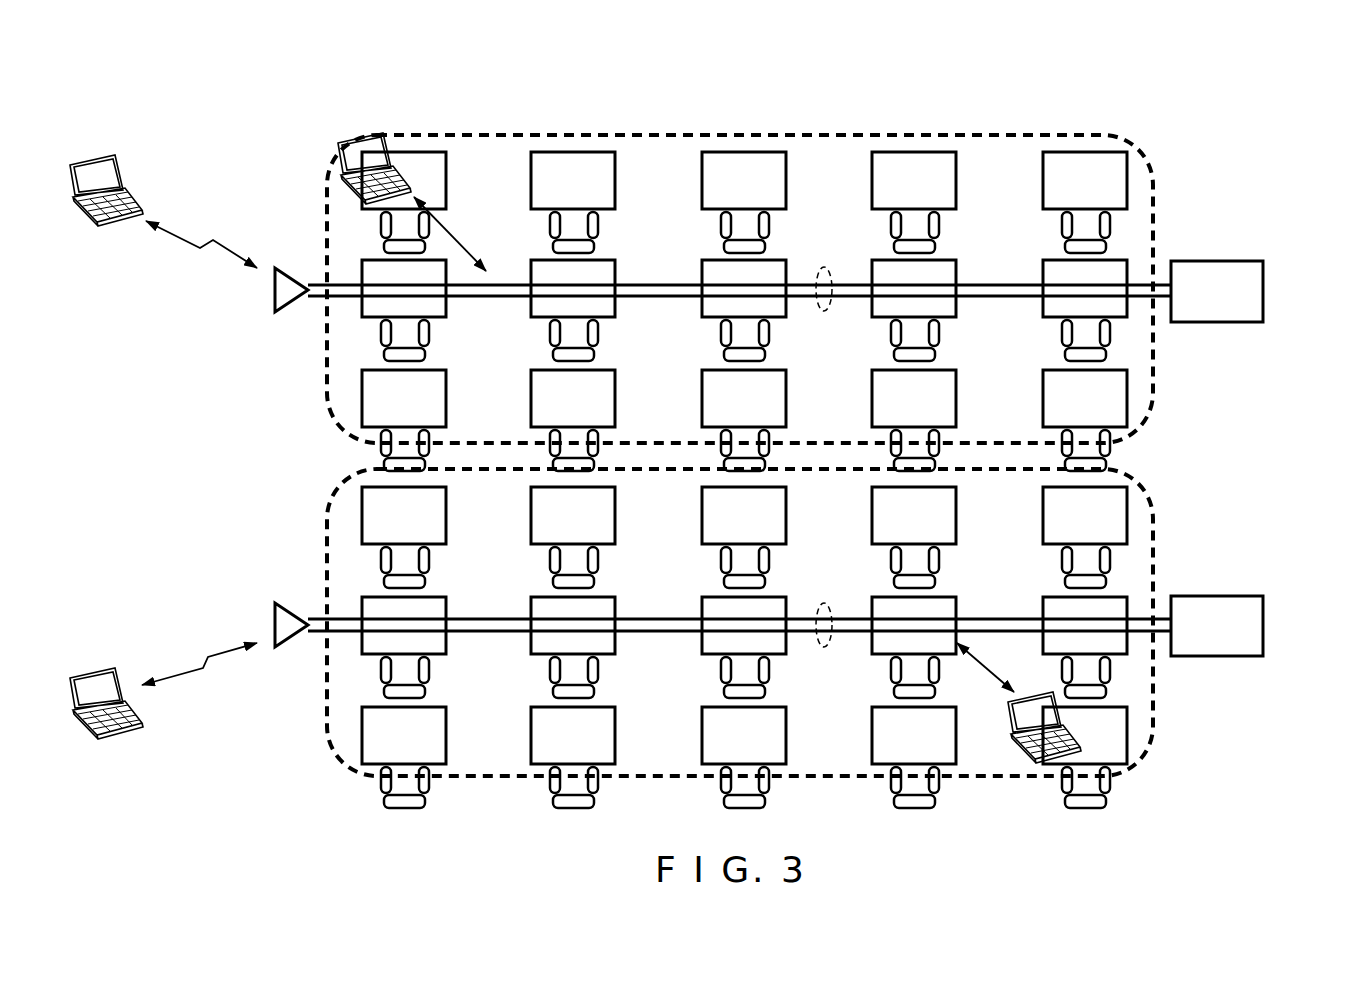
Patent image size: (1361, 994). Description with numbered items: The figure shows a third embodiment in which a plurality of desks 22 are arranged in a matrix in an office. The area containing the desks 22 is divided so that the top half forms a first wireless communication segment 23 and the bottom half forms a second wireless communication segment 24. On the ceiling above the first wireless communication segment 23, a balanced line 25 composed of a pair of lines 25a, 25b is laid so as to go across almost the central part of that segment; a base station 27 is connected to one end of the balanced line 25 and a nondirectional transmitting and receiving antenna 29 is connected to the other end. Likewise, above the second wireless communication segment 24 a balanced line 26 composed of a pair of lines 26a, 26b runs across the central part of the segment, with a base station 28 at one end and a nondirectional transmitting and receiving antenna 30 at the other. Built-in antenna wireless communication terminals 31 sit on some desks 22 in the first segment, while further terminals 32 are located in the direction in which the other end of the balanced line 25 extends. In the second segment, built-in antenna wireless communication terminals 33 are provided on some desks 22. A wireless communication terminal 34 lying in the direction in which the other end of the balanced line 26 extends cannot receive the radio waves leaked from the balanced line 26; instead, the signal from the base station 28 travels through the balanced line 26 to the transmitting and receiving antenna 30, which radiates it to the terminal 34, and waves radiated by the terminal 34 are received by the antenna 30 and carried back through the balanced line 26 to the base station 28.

The desk 22 is at (570, 163).
The first wireless communication segment 23 is at (985, 130).
The second wireless communication segment 24 is at (1158, 702).
The balanced line 25 is at (739, 283).
The line 25a is at (993, 284).
The line 25b is at (995, 298).
The balanced line 26 is at (739, 615).
The line 26a is at (993, 618).
The line 26b is at (1023, 633).
The base station 27 is at (1265, 291).
The base station 28 is at (1265, 626).
The nondirectional transmitting and receiving antenna 29 is at (272, 290).
The nondirectional transmitting and receiving antenna 30 is at (272, 625).
The built-in antenna wireless communication terminal 31 is at (338, 152).
The built-in antenna wireless communication terminal 32 is at (132, 184).
The built-in antenna wireless communication terminal 33 is at (1023, 754).
The wireless communication terminal 34 is at (132, 730).